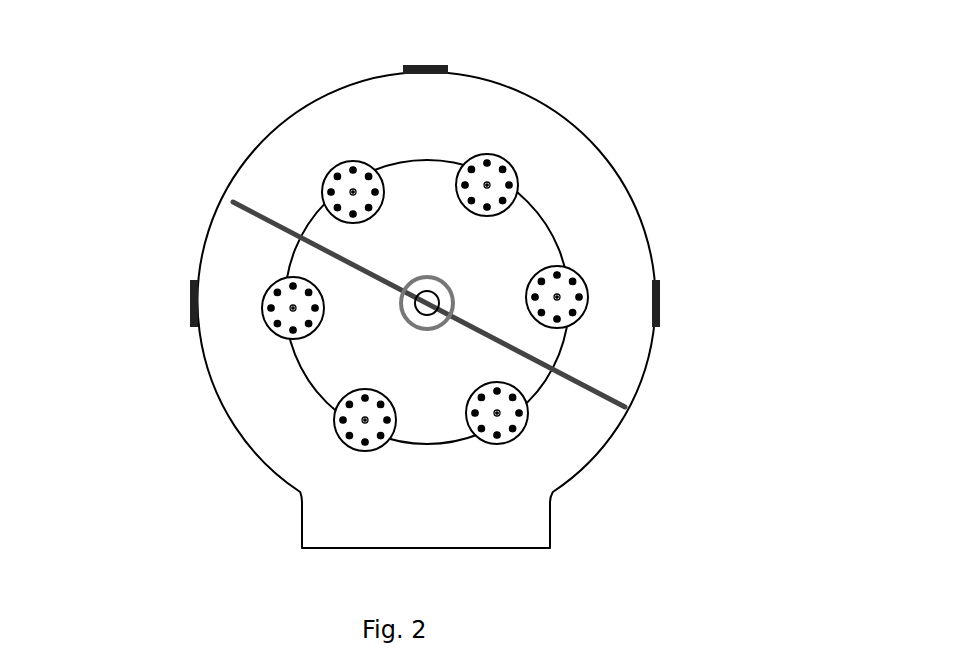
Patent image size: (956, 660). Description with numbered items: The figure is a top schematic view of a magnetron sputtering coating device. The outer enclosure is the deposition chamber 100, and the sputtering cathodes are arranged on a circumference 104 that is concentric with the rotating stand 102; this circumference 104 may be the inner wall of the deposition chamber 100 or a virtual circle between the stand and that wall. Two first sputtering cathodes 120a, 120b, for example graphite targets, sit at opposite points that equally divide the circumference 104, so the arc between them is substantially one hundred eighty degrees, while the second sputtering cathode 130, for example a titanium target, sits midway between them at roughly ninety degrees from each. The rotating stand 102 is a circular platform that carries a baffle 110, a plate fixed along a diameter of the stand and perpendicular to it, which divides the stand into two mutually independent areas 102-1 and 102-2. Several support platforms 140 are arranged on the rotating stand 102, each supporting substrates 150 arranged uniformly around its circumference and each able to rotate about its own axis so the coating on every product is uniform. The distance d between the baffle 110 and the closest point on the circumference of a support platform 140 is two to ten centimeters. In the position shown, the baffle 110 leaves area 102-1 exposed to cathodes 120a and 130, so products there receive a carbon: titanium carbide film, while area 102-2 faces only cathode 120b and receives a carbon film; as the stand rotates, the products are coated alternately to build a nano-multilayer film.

The deposition chamber 100 is at (419, 276).
The circumference 104 is at (307, 107).
The second sputtering cathode 130 is at (425, 67).
The first sputtering cathode 120a is at (660, 310).
The first sputtering cathode 120b is at (192, 303).
The rotating stand 102 is at (529, 338).
The first area of the rotating stand 102-1 is at (481, 247).
The second area of the rotating stand 102-2 is at (434, 361).
The baffle 110 is at (465, 318).
The support platform 140 is at (583, 287).
The substrate 150 is at (582, 315).
The distance between baffle and support platform circumference d is at (627, 409).